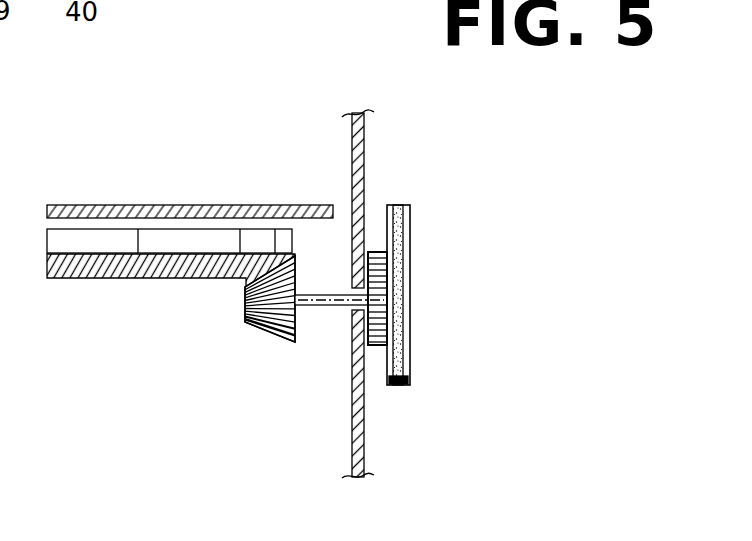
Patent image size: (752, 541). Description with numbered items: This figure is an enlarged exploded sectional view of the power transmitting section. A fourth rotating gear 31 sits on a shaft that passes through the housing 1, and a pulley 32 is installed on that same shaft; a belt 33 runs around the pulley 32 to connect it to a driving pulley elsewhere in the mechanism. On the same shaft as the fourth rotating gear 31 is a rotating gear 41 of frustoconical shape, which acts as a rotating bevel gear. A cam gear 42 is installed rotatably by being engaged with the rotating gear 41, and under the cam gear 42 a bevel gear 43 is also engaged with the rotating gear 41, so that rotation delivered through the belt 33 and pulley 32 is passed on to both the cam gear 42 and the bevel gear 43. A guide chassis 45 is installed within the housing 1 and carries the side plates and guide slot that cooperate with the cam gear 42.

The housing 1 is at (376, 163).
The fourth rotating gear 31 is at (388, 263).
The pulley 32 is at (410, 300).
The belt 33 is at (398, 386).
The rotating gear 41 is at (272, 332).
The cam gear 42 is at (206, 237).
The bevel gear 43 is at (144, 282).
The guide chassis 45 is at (281, 207).